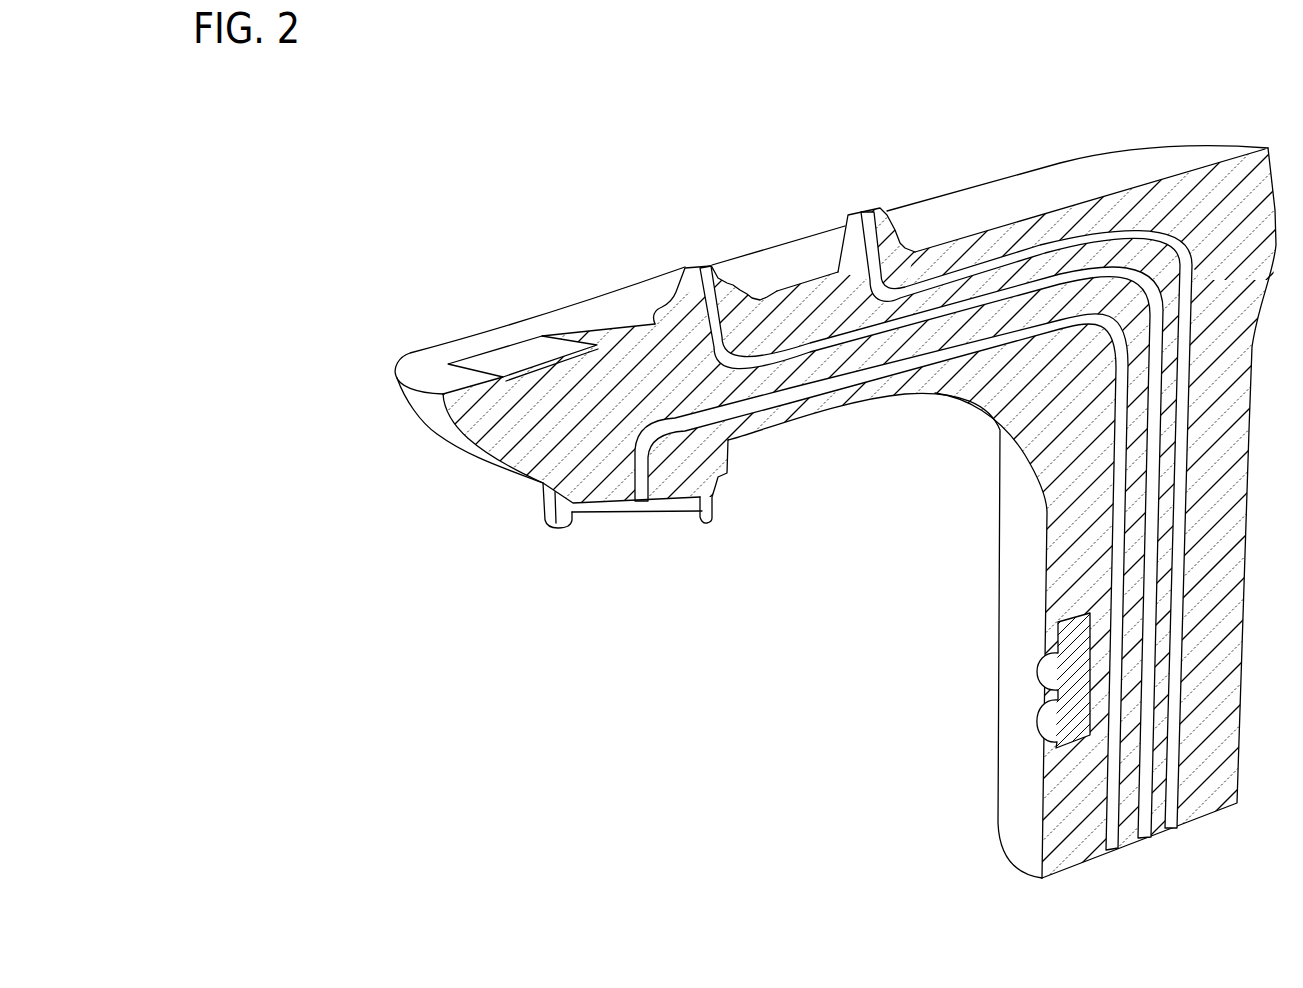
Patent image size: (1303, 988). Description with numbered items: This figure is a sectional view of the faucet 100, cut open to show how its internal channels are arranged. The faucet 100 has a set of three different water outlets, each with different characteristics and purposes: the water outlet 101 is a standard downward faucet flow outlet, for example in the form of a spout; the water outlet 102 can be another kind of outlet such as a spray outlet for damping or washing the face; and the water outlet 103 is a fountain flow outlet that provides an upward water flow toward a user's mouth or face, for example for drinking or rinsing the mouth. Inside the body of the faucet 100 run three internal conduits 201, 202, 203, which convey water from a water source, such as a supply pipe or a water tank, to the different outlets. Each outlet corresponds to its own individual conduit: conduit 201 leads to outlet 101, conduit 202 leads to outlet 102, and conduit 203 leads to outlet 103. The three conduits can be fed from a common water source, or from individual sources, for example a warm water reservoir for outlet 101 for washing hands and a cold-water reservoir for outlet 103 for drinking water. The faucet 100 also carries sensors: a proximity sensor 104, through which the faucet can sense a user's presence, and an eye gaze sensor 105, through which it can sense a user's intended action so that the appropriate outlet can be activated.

The faucet 100 is at (903, 103).
The water outlet 101 is at (652, 513).
The water outlet 102 is at (703, 263).
The water outlet 103 is at (862, 212).
The proximity sensor 104 is at (1058, 653).
The eye gaze sensor 105 is at (507, 363).
The conduit 201 is at (1112, 843).
The conduit 202 is at (1143, 815).
The conduit 203 is at (1172, 790).